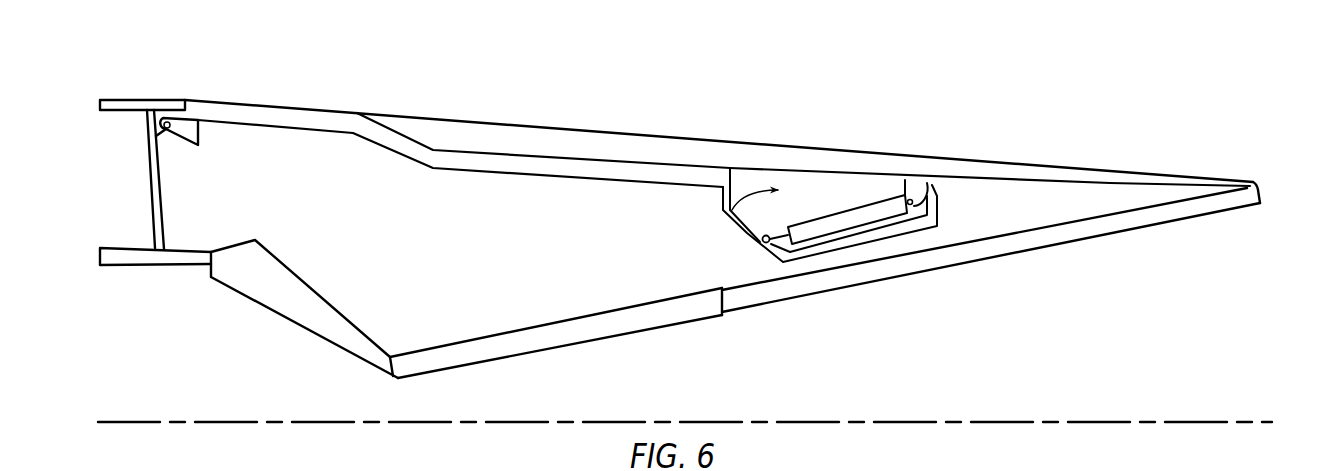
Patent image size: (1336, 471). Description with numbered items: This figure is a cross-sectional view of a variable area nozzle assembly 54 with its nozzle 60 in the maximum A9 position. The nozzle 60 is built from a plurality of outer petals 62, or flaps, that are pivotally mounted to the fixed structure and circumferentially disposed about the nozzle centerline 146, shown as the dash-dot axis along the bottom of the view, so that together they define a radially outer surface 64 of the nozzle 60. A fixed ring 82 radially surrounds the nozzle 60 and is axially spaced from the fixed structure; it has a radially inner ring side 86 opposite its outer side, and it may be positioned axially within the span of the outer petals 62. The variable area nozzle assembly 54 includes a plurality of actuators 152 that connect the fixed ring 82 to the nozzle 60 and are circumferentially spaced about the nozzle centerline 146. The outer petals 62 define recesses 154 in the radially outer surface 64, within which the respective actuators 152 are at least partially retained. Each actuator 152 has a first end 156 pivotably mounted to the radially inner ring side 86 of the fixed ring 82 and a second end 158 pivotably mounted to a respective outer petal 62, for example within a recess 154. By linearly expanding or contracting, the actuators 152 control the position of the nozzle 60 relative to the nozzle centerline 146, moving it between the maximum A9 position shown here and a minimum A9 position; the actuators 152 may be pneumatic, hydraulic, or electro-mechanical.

The variable area nozzle assembly 54 is at (1174, 89).
The fixed ring 82 is at (1012, 161).
The outer petals 62 is at (1169, 169).
The nozzle 60 is at (1230, 225).
The radially outer surface 64 is at (588, 158).
The radially inner ring side 86 is at (522, 170).
The recesses 154 is at (722, 212).
The second end 158 is at (748, 239).
The actuators 152 is at (855, 235).
The first end 156 is at (931, 207).
The nozzle centerline 146 is at (1260, 421).